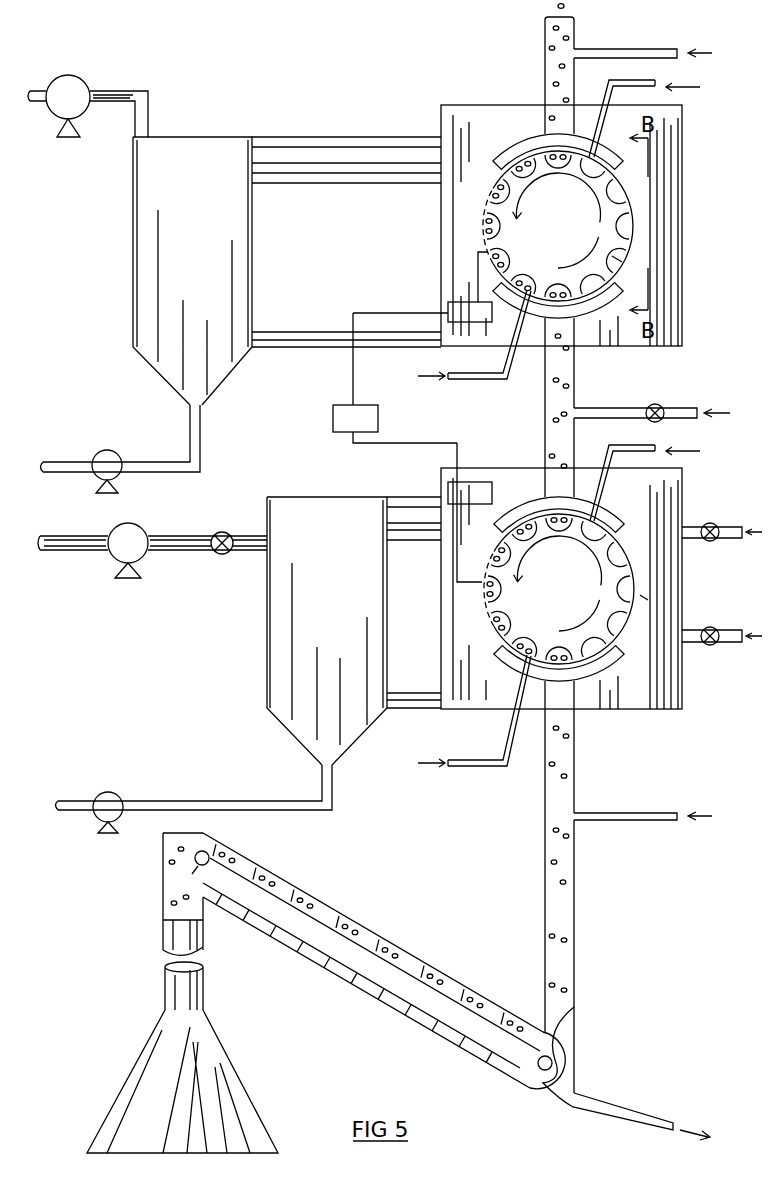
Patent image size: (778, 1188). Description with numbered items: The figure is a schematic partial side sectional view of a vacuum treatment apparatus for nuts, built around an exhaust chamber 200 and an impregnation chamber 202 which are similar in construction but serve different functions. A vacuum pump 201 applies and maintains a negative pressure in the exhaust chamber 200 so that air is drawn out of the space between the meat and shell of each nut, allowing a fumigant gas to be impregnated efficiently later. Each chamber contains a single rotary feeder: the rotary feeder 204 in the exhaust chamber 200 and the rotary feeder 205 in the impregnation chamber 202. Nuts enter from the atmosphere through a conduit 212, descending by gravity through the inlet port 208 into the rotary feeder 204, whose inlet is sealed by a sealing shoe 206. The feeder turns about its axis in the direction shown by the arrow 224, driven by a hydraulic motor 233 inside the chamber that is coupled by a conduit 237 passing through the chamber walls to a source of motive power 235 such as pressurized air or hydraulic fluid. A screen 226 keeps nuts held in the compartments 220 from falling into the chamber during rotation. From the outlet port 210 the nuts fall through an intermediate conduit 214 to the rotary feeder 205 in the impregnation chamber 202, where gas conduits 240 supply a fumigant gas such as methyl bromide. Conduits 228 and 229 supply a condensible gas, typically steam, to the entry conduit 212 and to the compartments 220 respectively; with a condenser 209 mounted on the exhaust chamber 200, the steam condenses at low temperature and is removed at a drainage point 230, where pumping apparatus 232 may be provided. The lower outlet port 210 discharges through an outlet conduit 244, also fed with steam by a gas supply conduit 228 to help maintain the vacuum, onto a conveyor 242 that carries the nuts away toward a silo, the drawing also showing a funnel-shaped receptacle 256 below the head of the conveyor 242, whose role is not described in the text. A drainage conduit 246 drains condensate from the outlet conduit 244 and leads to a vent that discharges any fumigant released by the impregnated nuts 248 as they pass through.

The exhaust chamber 200 is at (466, 88).
The vacuum pump 201 is at (86, 82).
The impregnation chamber 202 is at (699, 697).
The rotary feeder 204 is at (646, 255).
The rotary feeder 205 is at (662, 604).
The sealing shoe 206 is at (605, 518).
The inlet port 208 is at (620, 170).
The condenser 209 is at (133, 205).
The outlet port 210 is at (574, 318).
The conduit 212 is at (543, 72).
The intermediate conduit 214 is at (576, 392).
The compartments 220 is at (600, 285).
The arrow 224 is at (602, 222).
The screen 226 is at (488, 222).
The gas supply conduit 228 is at (635, 50).
The conduit 229 is at (657, 82).
The drainage point 230 is at (203, 410).
The pumping apparatus 232 is at (110, 448).
The hydraulic motor 233 is at (470, 417).
The source of motive power 235 is at (355, 418).
The conduit 237 is at (409, 313).
The gas conduits 240 is at (722, 526).
The conveyor 242 is at (385, 958).
The outlet conduit 244 is at (576, 922).
The drainage conduit 246 is at (592, 1102).
The impregnated nuts 248 is at (566, 6).
The funnel 256 is at (236, 1072).